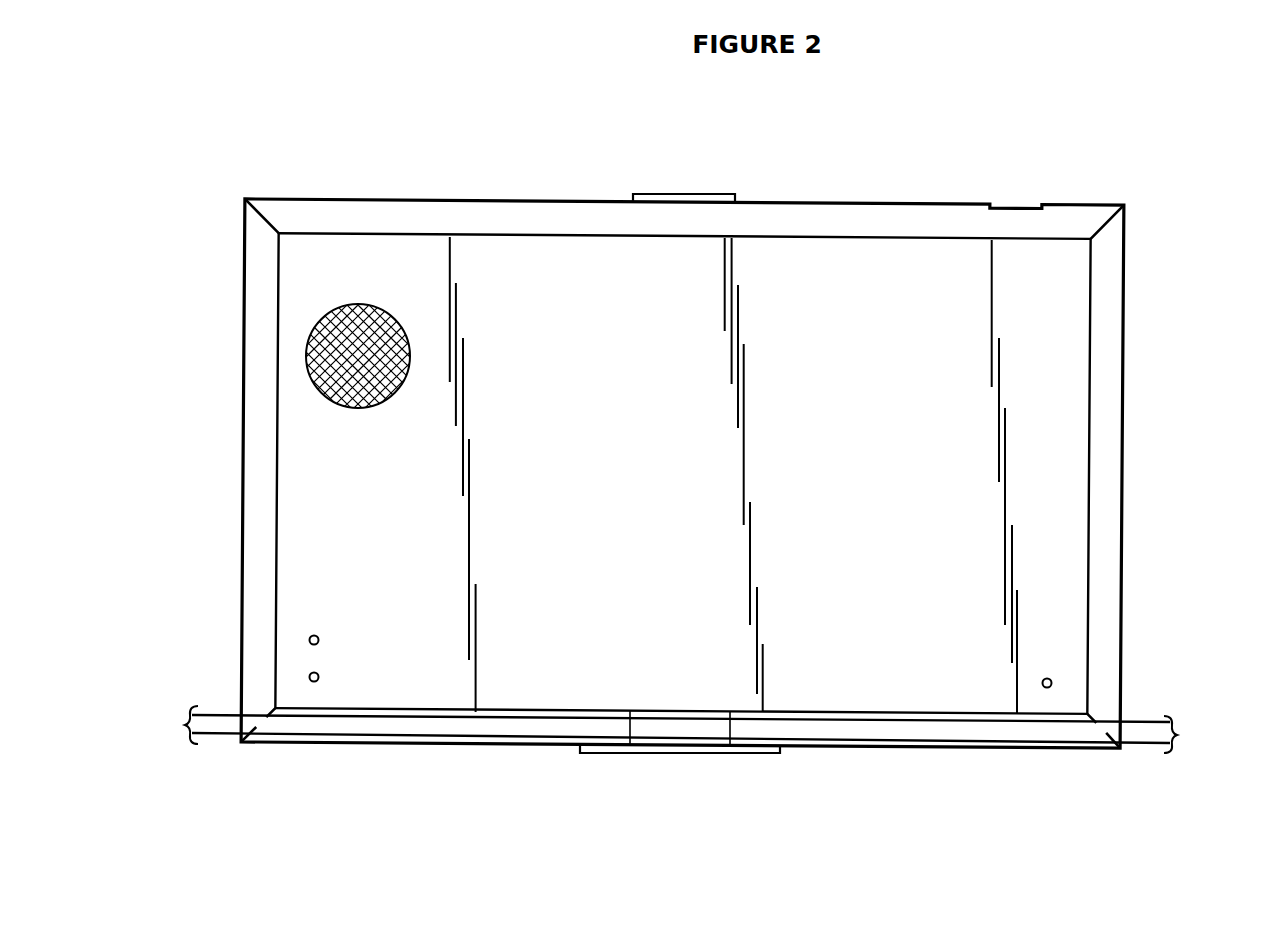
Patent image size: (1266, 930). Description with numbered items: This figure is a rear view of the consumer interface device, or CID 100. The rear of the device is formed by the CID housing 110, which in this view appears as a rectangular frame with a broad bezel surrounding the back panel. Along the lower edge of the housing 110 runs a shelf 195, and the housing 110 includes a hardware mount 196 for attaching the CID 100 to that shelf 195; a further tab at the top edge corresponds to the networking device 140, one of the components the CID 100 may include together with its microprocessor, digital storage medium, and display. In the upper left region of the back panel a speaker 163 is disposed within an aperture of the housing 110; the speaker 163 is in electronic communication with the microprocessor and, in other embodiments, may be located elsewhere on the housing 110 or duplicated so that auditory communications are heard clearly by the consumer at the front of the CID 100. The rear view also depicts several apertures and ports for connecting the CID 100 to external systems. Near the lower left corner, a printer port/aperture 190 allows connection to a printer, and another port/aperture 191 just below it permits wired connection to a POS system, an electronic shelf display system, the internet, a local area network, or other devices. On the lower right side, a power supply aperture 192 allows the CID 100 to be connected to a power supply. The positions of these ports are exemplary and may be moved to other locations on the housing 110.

The consumer interface device (CID) 100 is at (178, 295).
The CID housing 110 is at (1102, 292).
The networking device 140 is at (692, 202).
The speaker 163 is at (357, 340).
The printer port/aperture 190 is at (308, 639).
The port/aperture 191 is at (308, 677).
The power supply aperture 192 is at (1052, 681).
The shelf 195 is at (1148, 727).
The hardware mount 196 is at (710, 752).